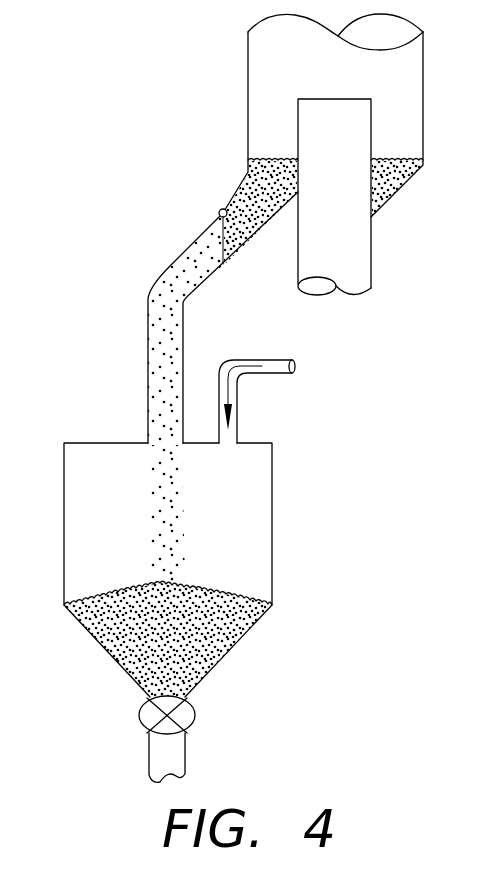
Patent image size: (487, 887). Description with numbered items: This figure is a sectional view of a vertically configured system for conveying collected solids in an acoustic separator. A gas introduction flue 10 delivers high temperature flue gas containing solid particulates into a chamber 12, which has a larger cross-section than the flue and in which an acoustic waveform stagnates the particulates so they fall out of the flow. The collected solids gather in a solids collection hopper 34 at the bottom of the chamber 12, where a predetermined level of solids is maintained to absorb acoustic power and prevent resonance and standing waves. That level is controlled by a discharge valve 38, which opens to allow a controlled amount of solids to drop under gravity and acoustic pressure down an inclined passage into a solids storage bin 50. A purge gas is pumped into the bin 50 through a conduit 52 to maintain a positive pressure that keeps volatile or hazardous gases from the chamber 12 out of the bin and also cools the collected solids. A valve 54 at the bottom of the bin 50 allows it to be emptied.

The gas introduction flue 10 is at (372, 246).
The chamber 12 is at (247, 85).
The solids collection hopper 34 is at (404, 186).
The discharge valve 38 is at (222, 209).
The solids storage bin 50 is at (273, 598).
The conduit 52 is at (256, 359).
The valve 54 is at (196, 712).